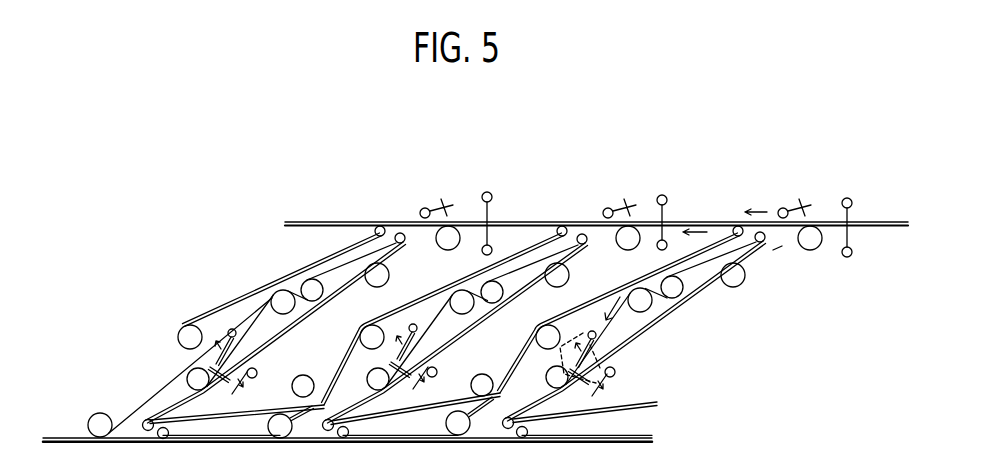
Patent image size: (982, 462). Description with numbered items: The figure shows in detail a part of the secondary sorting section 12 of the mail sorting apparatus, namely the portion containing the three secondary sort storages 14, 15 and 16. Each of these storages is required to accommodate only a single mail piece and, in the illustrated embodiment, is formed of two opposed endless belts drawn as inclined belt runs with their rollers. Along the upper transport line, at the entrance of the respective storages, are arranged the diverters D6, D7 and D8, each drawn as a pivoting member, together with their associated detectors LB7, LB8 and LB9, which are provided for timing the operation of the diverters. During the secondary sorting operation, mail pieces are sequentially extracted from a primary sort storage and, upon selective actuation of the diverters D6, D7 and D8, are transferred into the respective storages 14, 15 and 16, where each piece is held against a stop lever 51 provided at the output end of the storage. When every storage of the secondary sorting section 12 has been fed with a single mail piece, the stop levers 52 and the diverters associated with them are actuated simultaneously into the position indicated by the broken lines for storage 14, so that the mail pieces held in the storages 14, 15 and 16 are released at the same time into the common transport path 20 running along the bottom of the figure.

The secondary sorting section 12 is at (769, 448).
The storage 14 is at (632, 324).
The storage 15 is at (456, 331).
The storage 16 is at (272, 332).
The common transport path 20 is at (60, 437).
The stop lever 51 is at (209, 367).
The stop lever 52 is at (257, 374).
The diverter D6 is at (780, 209).
The diverter D7 is at (604, 209).
The diverter D8 is at (421, 208).
The detector LB7 is at (852, 208).
The detector LB8 is at (664, 205).
The detector LB9 is at (483, 209).